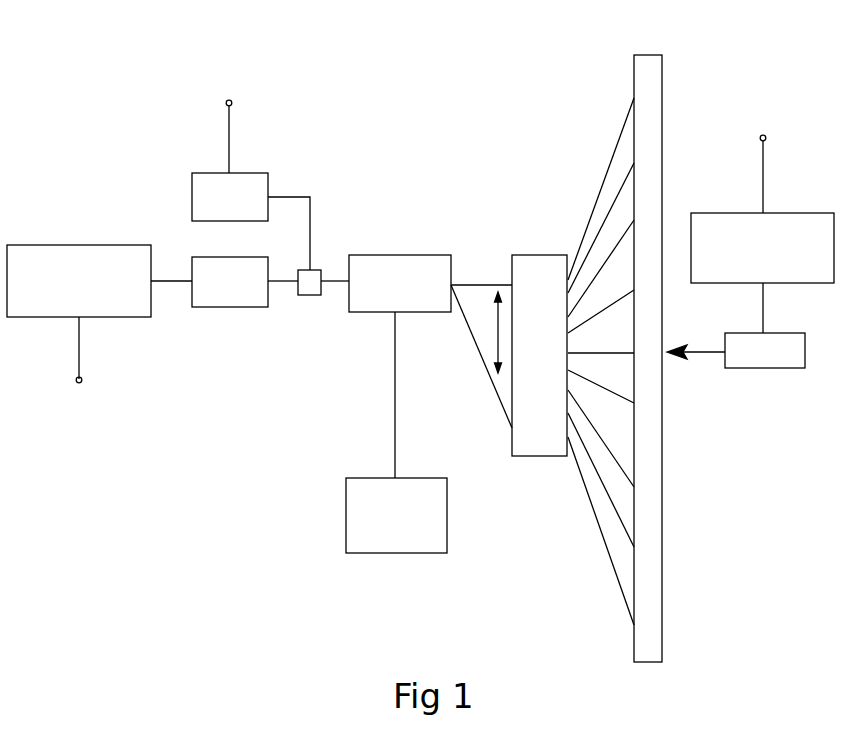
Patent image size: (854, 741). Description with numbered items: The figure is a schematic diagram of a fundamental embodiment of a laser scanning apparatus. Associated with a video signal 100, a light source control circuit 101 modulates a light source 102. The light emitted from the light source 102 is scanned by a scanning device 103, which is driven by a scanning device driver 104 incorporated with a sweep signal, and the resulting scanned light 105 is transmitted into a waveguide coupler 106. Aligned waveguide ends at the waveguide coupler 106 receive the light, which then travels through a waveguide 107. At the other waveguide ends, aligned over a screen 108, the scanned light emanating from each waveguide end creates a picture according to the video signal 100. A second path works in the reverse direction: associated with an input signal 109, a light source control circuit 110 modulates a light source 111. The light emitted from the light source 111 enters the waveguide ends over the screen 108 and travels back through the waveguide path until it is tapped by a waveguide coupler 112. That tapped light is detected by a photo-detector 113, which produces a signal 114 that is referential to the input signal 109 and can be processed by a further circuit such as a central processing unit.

The video signal 100 is at (80, 364).
The light source control circuit 101 is at (130, 307).
The light source 102 is at (238, 294).
The scanning device 103 is at (372, 262).
The scanning device driver 104 is at (362, 483).
The scanned light 105 is at (478, 278).
The waveguide coupler 106 is at (552, 440).
The waveguide 107 is at (597, 182).
The screen 108 is at (648, 74).
The input signal 109 is at (766, 161).
The light source control circuit 110 is at (787, 220).
The light source 111 is at (777, 347).
The waveguide coupler 112 is at (312, 280).
The photo-detector 113 is at (247, 184).
The signal 114 is at (233, 123).